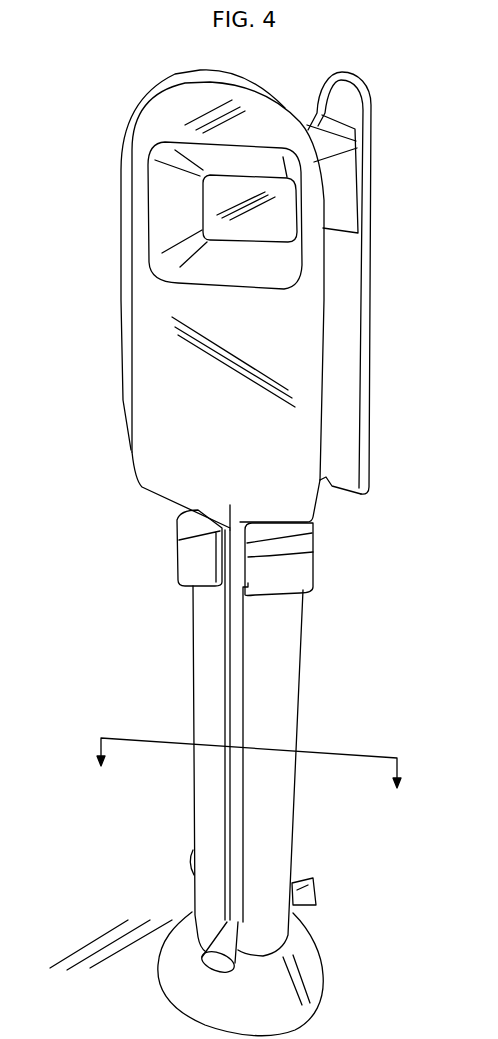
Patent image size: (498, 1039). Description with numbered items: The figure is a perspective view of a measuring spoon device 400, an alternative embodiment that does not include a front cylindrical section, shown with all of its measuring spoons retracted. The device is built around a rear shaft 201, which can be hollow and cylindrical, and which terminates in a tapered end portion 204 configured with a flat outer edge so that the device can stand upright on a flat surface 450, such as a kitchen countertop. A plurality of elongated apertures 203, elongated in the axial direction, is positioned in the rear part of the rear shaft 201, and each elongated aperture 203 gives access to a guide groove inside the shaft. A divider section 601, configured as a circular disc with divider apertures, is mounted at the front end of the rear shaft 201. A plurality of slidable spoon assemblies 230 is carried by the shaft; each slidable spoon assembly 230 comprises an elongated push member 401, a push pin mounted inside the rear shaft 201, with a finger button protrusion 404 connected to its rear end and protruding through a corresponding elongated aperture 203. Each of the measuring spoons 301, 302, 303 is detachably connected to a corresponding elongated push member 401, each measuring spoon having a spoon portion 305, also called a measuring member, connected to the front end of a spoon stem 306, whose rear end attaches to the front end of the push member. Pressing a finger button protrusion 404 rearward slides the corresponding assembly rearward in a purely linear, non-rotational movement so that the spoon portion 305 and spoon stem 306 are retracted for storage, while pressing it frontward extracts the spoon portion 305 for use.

The measuring spoon device 400 is at (117, 83).
The slidable spoon assembly 230 is at (108, 333).
The measuring spoon 302 is at (117, 147).
The measuring spoon 303 is at (368, 100).
The spoon portion 305 is at (237, 424).
The measuring spoon 301 is at (140, 483).
The spoon stem 306 is at (320, 530).
The divider section 601 is at (177, 552).
The rear shaft 201 is at (308, 667).
The elongated aperture 203 is at (237, 643).
The elongated push member 401 is at (235, 700).
The finger button protrusion 404 is at (183, 863).
The tapered end portion 204 is at (327, 975).
The flat surface 450 is at (100, 940).